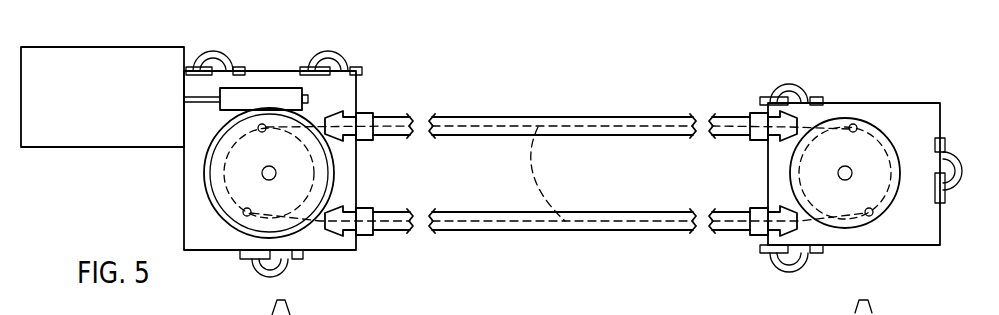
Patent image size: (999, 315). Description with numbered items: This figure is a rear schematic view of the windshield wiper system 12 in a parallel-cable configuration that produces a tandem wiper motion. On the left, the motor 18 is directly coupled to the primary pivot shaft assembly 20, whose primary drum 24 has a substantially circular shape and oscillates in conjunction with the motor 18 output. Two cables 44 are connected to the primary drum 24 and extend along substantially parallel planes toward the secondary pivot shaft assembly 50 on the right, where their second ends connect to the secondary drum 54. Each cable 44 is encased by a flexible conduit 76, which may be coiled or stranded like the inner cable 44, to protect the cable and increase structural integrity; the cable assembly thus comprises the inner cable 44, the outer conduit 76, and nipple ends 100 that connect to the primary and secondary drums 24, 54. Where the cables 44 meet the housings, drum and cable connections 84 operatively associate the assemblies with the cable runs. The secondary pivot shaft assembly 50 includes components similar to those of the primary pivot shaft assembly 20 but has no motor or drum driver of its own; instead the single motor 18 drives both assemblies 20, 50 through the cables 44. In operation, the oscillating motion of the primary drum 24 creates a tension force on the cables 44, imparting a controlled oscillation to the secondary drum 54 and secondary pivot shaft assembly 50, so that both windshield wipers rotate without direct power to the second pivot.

The windshield wiper system 12 is at (466, 55).
The motor 18 is at (260, 96).
The primary pivot shaft assembly 20 is at (178, 171).
The primary drum 24 is at (235, 215).
The nipple ends 100 is at (250, 215).
The drum and cable connections 84 is at (341, 207).
The flexible conduit 76 is at (673, 212).
The cable 44 is at (553, 127).
The secondary pivot shaft assembly 50 is at (942, 220).
The secondary drum 54 is at (842, 118).